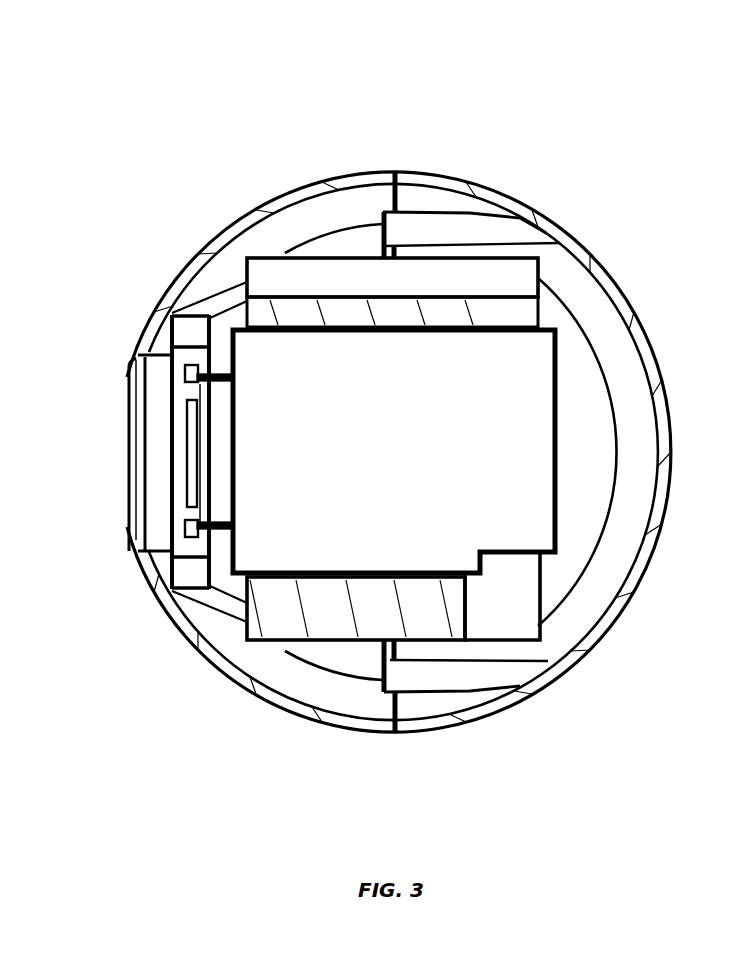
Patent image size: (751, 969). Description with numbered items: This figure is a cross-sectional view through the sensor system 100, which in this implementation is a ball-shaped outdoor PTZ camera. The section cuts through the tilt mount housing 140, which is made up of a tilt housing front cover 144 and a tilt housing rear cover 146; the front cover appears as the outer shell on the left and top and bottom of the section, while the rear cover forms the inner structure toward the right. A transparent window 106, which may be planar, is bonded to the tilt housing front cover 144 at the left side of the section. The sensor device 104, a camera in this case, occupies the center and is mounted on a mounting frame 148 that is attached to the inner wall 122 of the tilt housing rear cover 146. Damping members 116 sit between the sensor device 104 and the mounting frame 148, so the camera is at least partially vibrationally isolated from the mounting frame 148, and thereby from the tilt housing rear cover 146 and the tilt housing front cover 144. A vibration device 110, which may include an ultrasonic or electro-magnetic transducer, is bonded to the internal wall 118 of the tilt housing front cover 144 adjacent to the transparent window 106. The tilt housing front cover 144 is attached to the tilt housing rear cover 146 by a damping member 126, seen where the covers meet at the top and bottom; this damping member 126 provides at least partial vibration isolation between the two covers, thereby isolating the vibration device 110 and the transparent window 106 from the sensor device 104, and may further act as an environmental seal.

The sensor system 100 is at (108, 66).
The sensor device 104 is at (443, 550).
The transparent window 106 is at (125, 424).
The vibration device 110 is at (197, 567).
The damping members 116 is at (497, 313).
The internal wall 118 is at (205, 622).
The inner wall 122 is at (643, 385).
The damping member 126 is at (390, 197).
The tilt mount housing 140 is at (208, 710).
The tilt housing front cover 144 is at (195, 238).
The tilt housing rear cover 146 is at (518, 189).
The mounting frame 148 is at (507, 277).